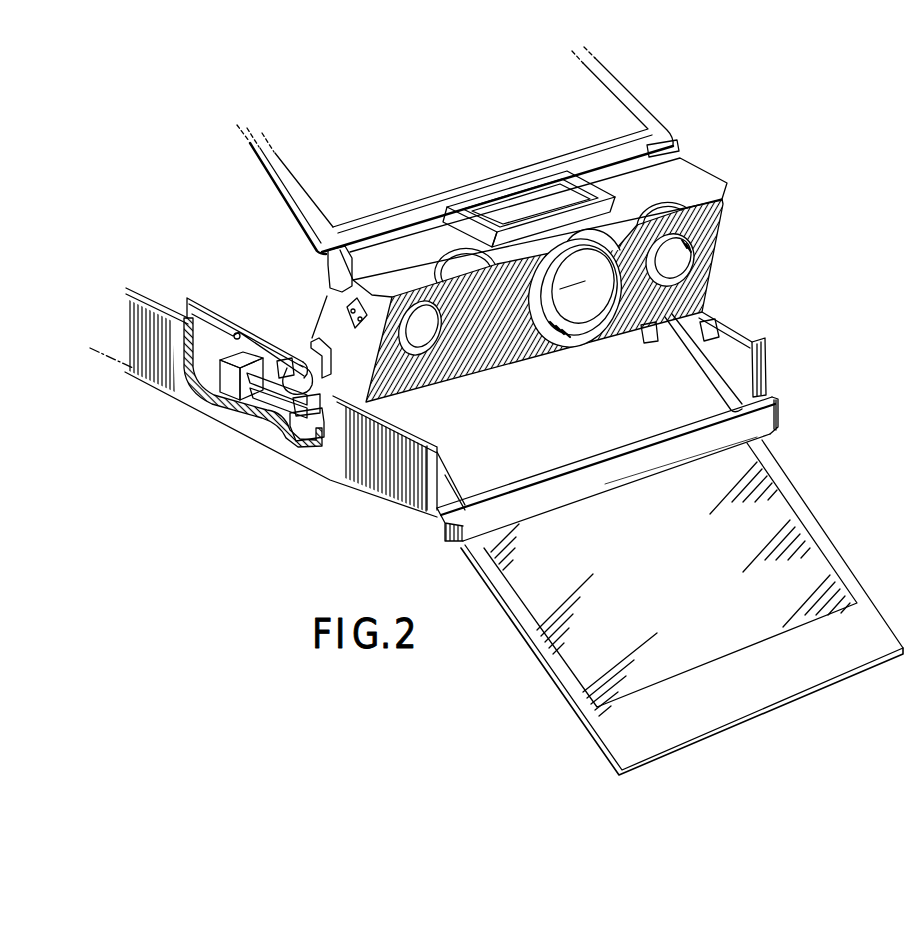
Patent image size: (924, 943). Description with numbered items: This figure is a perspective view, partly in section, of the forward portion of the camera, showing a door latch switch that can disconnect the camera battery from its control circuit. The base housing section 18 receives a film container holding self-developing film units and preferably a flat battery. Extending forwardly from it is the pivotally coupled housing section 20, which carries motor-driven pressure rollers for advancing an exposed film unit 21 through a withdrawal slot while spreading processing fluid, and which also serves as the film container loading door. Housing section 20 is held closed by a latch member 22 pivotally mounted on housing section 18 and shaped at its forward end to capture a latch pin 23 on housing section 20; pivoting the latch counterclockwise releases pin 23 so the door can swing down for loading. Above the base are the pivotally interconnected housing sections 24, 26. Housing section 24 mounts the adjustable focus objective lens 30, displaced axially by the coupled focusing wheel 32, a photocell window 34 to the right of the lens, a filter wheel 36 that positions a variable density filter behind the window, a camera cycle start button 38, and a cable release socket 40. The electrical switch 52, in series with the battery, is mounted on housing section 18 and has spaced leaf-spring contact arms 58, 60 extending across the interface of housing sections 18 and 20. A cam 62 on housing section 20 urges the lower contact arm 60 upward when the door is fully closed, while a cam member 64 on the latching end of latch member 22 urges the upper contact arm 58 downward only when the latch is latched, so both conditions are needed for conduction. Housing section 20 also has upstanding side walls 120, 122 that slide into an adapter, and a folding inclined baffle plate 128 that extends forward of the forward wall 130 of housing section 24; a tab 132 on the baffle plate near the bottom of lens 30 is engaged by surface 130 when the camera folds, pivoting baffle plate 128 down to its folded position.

The base housing section 18 is at (133, 340).
The pivotally coupled housing section 20 is at (348, 486).
The film unit 21 is at (647, 747).
The latch member 22 is at (210, 308).
The latch pin 23 is at (281, 360).
The housing section 24 is at (343, 292).
The housing section 26 is at (608, 103).
The objective lens 30 is at (563, 280).
The focusing wheel 32 is at (464, 270).
The photocell window 34 is at (667, 257).
The filter wheel 36 is at (677, 207).
The camera cycle start button 38 is at (421, 343).
The cable release socket 40 is at (349, 313).
The electrical switch 52 is at (226, 372).
The upper contact arm 58 is at (275, 377).
The lower contact arm 60 is at (283, 400).
The cam 62 is at (310, 428).
The cam member 64 is at (310, 392).
The side wall 120 is at (420, 483).
The side wall 122 is at (737, 333).
The baffle plate 128 is at (590, 444).
The forward wall 130 is at (498, 350).
The tab 132 is at (651, 344).